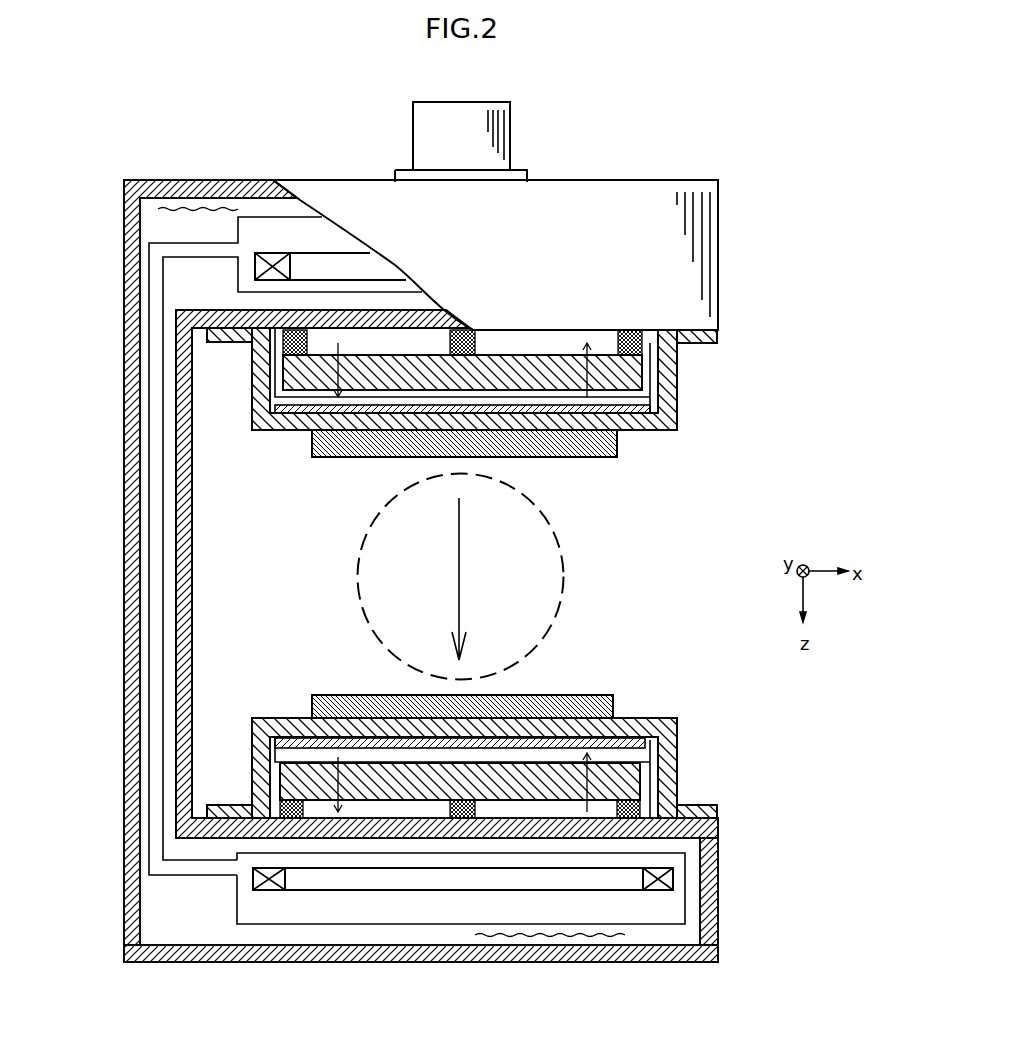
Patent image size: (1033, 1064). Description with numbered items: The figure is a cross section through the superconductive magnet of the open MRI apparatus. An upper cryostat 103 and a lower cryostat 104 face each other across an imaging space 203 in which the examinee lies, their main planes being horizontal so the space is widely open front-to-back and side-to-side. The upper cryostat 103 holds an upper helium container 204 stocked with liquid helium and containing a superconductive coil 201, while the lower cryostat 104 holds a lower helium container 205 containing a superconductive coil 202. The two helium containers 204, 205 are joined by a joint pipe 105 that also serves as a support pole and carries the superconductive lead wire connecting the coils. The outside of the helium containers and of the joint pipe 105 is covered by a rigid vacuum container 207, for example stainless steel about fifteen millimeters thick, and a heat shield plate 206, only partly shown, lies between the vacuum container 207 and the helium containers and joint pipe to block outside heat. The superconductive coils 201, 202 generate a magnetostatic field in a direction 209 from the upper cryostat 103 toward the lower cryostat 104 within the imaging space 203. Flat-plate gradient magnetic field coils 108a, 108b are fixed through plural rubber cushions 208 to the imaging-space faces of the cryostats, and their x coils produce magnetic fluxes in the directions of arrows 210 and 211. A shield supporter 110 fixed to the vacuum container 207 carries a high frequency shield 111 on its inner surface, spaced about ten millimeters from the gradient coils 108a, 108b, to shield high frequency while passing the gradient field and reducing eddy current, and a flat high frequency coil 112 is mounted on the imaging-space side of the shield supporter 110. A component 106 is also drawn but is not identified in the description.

The upper cryostat 103 is at (693, 181).
The lower cryostat 104 is at (675, 962).
The joint pipe 105 is at (150, 588).
The terminal 106 is at (468, 102).
The gradient magnetic field coil 108a is at (283, 400).
The gradient magnetic field coil 108b is at (283, 755).
The shield supporter 110 is at (678, 404).
The high frequency shield 111 is at (657, 430).
The high frequency coil 112 is at (613, 453).
The superconductive coil 201 is at (318, 252).
The superconductive coil 202 is at (315, 892).
The imaging space 203 is at (563, 557).
The upper helium container 204 is at (252, 216).
The lower helium container 205 is at (410, 927).
The heat shield plate 206 is at (125, 248).
The vacuum container 207 is at (162, 179).
The rubber cushions 208 is at (678, 344).
The direction of magnetostatic field 209 is at (459, 528).
The arrow 210 is at (338, 400).
The arrow 211 is at (587, 397).